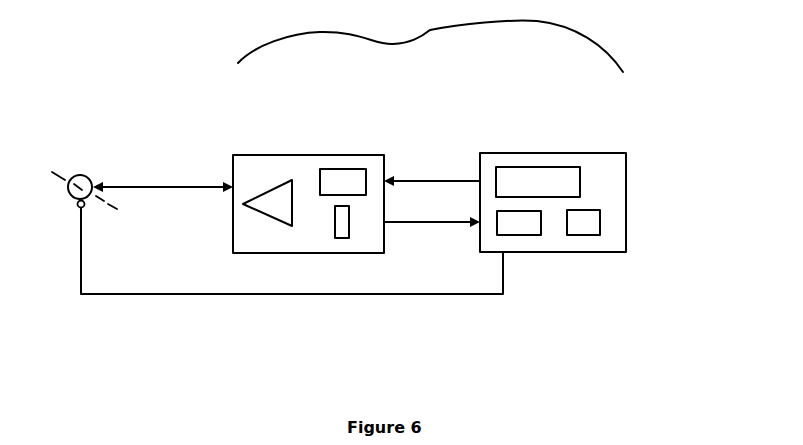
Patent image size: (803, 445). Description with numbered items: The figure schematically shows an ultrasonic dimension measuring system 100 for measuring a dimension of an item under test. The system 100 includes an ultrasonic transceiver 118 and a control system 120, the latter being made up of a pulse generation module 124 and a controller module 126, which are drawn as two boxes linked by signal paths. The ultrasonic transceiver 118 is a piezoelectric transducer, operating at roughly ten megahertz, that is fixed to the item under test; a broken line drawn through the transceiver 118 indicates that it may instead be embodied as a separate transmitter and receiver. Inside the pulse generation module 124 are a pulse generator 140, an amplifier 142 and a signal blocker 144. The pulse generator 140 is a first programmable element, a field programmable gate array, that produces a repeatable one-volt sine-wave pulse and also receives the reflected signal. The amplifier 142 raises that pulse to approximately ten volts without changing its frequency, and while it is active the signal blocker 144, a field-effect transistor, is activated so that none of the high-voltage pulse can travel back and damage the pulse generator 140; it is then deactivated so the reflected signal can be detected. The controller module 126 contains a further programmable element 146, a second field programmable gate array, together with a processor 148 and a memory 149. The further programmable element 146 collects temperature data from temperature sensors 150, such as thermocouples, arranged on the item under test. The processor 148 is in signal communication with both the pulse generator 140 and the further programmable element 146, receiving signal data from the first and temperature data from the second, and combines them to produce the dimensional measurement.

The ultrasonic dimension measuring system 100 is at (182, 72).
The ultrasonic transceiver 118 is at (73, 175).
The control system 120 is at (430, 36).
The pulse generation module 124 is at (252, 155).
The controller module 126 is at (626, 238).
The pulse generator 140 is at (348, 175).
The amplifier 142 is at (280, 193).
The signal blocker 144 is at (343, 230).
The further programmable element 146 is at (530, 235).
The processor 148 is at (531, 167).
The memory 149 is at (598, 212).
The temperature sensors 150 is at (78, 208).